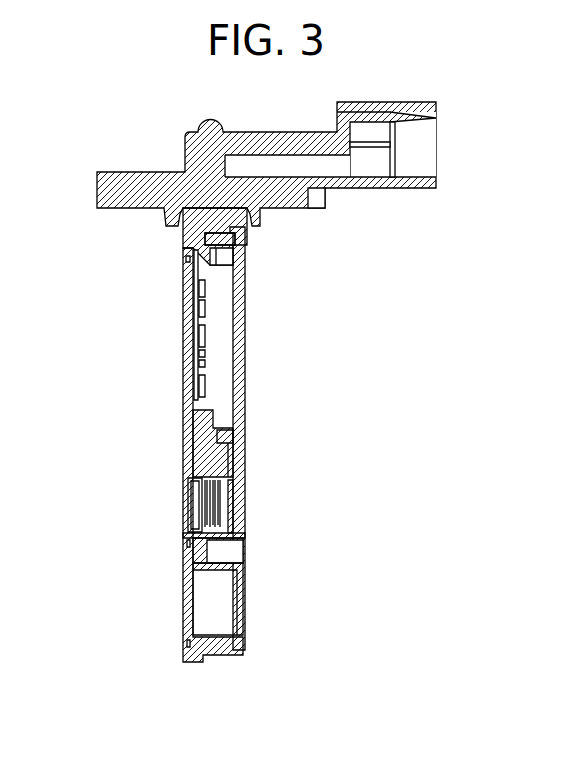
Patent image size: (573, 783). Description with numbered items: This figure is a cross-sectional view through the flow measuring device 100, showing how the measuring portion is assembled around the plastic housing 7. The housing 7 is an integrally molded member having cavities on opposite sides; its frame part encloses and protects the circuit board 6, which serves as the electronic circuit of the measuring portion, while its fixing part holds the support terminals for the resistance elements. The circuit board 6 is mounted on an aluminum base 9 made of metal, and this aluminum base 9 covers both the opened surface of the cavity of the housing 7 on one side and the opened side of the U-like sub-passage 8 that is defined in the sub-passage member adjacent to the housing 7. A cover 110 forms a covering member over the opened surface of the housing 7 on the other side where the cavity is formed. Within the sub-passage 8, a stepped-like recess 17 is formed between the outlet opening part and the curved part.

The housing 100 is at (266, 183).
The cover 110 is at (243, 363).
The aluminum base 9 is at (185, 345).
The circuit board 6 is at (199, 318).
The housing 7 is at (197, 438).
The stepped-like recess 17 is at (190, 505).
The sub-passage 8 is at (225, 607).